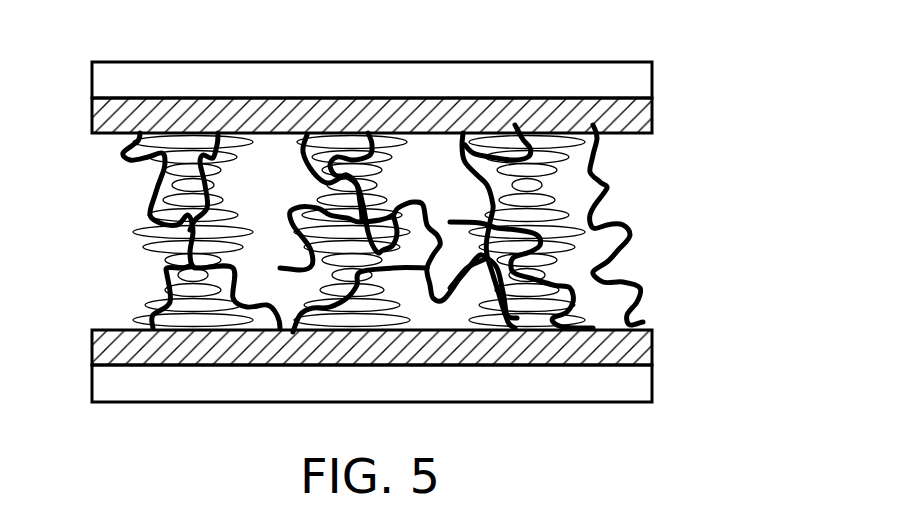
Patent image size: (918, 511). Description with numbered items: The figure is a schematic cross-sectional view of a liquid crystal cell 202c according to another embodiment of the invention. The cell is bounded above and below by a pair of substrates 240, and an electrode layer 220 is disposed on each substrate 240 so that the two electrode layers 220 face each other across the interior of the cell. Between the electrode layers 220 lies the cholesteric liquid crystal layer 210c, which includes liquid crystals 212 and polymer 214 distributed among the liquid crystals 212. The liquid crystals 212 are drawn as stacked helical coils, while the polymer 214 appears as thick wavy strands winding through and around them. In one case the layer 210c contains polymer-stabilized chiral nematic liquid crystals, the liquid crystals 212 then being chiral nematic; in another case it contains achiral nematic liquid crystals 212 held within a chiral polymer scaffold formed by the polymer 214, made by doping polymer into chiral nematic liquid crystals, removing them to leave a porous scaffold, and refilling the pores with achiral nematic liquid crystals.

The substrate 240 is at (642, 79).
The electrode layer 220 is at (642, 114).
The liquid crystals 212 is at (545, 203).
The polymer 214 is at (625, 222).
The cholesteric liquid crystal layer 210c is at (463, 228).
The liquid crystal cell 202c is at (448, 252).